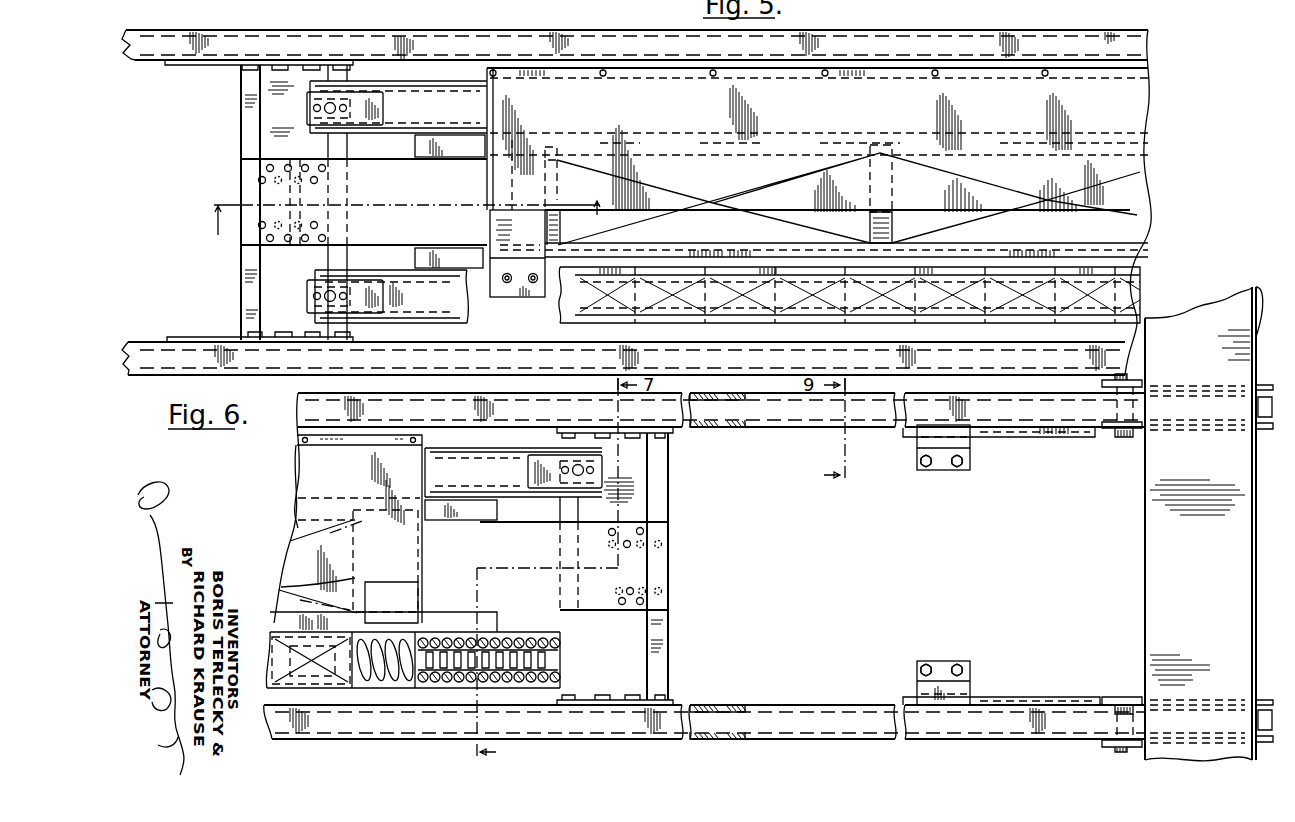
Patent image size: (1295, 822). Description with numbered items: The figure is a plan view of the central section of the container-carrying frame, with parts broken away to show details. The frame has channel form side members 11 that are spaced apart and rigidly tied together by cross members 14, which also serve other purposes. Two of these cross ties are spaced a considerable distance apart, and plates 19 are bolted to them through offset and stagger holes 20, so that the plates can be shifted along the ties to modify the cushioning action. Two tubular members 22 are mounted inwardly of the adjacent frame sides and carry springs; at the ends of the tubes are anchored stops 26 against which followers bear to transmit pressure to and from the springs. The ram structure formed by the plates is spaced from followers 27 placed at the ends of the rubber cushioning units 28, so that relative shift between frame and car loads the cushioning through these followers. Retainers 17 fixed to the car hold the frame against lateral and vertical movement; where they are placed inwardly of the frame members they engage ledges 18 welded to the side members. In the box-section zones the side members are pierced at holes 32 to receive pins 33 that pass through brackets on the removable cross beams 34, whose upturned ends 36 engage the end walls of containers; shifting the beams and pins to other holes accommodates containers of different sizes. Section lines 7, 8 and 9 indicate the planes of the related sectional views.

In FIG. 6, the section line 7- 7 is at (547, 570).
In FIG. 5, the section line 8- 8 is at (406, 227).
In FIG. 6, the section line 9- 9 is at (828, 431).
In FIG. 5, the channel form side members 11 is at (1148, 33).
In FIG. 5, the cross members 14 is at (241, 125).
In FIG. 6, the cross members 14 is at (560, 438).
In FIG. 6, the retainers 17 is at (917, 438).
In FIG. 6, the ledges 18 is at (1026, 434).
In FIG. 5, the plates 19 is at (242, 159).
In FIG. 6, the plates 19 is at (660, 522).
In FIG. 5, the offset and stagger holes 20 is at (258, 180).
In FIG. 6, the offset and stagger holes 20 is at (662, 543).
In FIG. 5, the tubular members 22 is at (404, 136).
In FIG. 6, the tubular members 22 is at (486, 445).
In FIG. 5, the stops 26 is at (309, 99).
In FIG. 6, the stops 26 is at (602, 467).
In FIG. 5, the followers 27 is at (546, 238).
In FIG. 6, the followers 27 is at (362, 606).
In FIG. 6, the cushioning units 28 is at (348, 529).
In FIG. 6, the holes 32 is at (722, 428).
In FIG. 6, the pins 33 is at (1124, 443).
In FIG. 6, the cross beams 34 is at (1145, 516).
In FIG. 6, the upturned ends 36 is at (1256, 287).